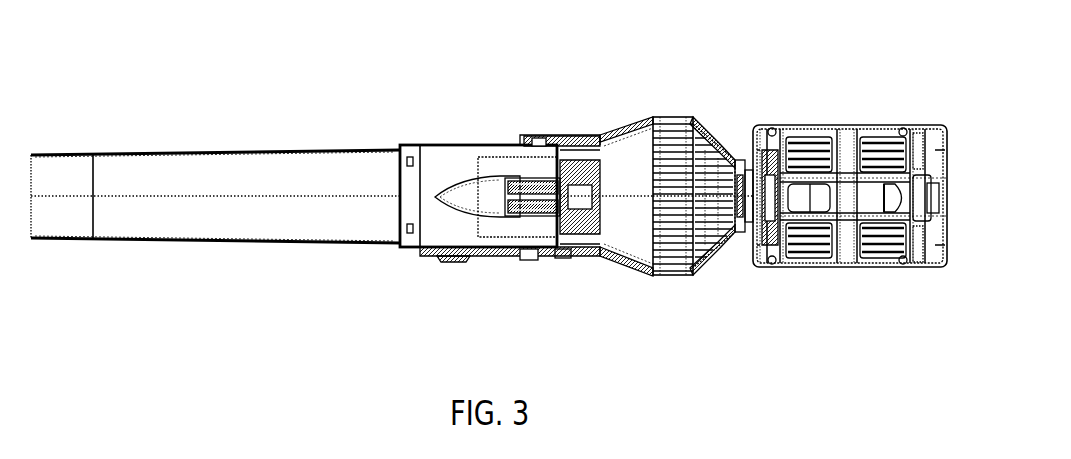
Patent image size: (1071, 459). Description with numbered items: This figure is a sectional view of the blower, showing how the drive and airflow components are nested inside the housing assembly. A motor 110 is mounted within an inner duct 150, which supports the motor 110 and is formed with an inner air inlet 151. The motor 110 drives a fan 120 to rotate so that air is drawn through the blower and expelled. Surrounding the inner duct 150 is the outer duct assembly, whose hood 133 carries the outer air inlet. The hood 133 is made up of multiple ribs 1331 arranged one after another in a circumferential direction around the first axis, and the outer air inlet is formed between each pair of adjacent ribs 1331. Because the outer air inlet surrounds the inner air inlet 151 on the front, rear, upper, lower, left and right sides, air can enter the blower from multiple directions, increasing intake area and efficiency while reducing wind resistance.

The motor 110 is at (520, 258).
The fan 120 is at (597, 150).
The hood 133 is at (697, 125).
The ribs 1331 is at (712, 128).
The inner duct 150 is at (447, 148).
The inner air inlet 151 is at (653, 272).